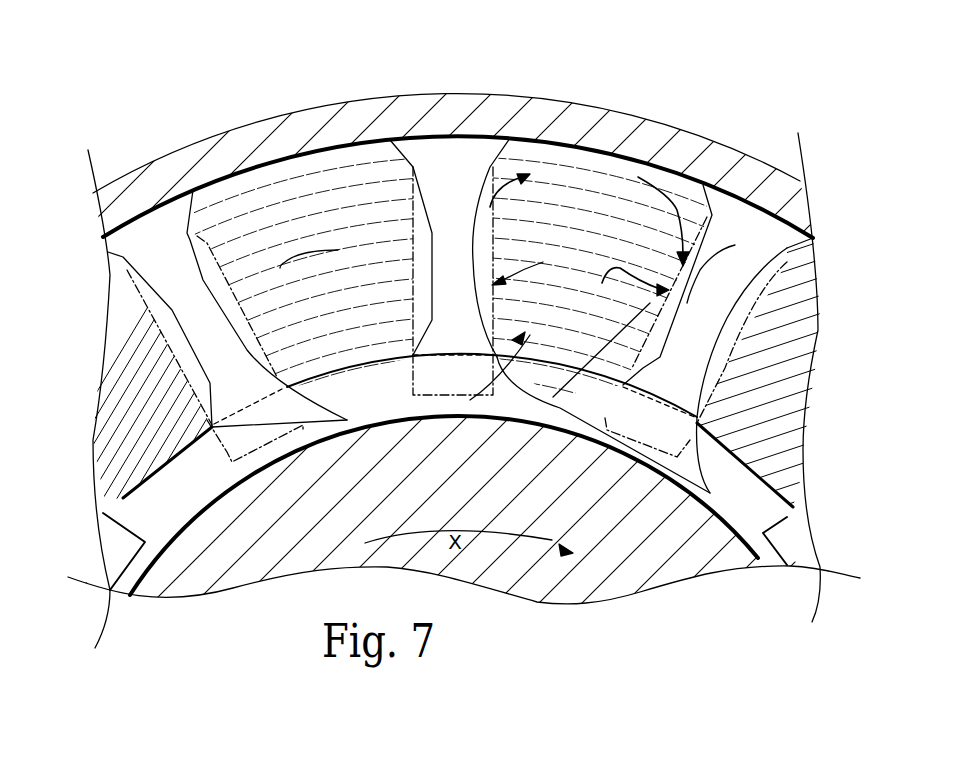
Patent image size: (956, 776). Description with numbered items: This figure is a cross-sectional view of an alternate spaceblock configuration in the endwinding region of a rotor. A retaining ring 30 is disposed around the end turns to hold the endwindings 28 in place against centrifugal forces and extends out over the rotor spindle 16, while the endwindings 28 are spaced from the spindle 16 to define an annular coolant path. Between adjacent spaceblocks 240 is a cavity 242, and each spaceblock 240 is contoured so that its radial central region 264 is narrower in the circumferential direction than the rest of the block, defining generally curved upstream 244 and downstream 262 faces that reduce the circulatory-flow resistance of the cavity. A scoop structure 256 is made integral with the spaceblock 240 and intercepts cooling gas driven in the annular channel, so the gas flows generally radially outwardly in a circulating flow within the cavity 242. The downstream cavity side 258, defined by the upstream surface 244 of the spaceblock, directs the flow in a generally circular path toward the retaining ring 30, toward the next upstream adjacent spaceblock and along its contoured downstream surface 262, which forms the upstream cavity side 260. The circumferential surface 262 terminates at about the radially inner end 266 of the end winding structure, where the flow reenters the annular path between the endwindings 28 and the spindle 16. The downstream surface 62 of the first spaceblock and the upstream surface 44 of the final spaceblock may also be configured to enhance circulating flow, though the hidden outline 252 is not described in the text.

The rotor spindle 16 is at (593, 583).
The endwindings 28 is at (343, 382).
The retaining ring 30 is at (465, 110).
The upstream surface of the final spaceblock 44 is at (115, 545).
The downstream surface of the first spaceblock 62 is at (788, 513).
The spaceblock 240 is at (427, 153).
The cavity 242 is at (300, 200).
The upstream surface of the spaceblock 244 is at (477, 232).
The hidden pole shoe outline 252 is at (212, 427).
The scoop structure 256 is at (304, 410).
The cavity side 258 is at (538, 268).
The cavity side 260 is at (611, 332).
The downstream surface of the spaceblock 262 is at (517, 263).
The radial central region of the spaceblock 264 is at (452, 230).
The radially inner end of the end winding structure 266 is at (380, 397).